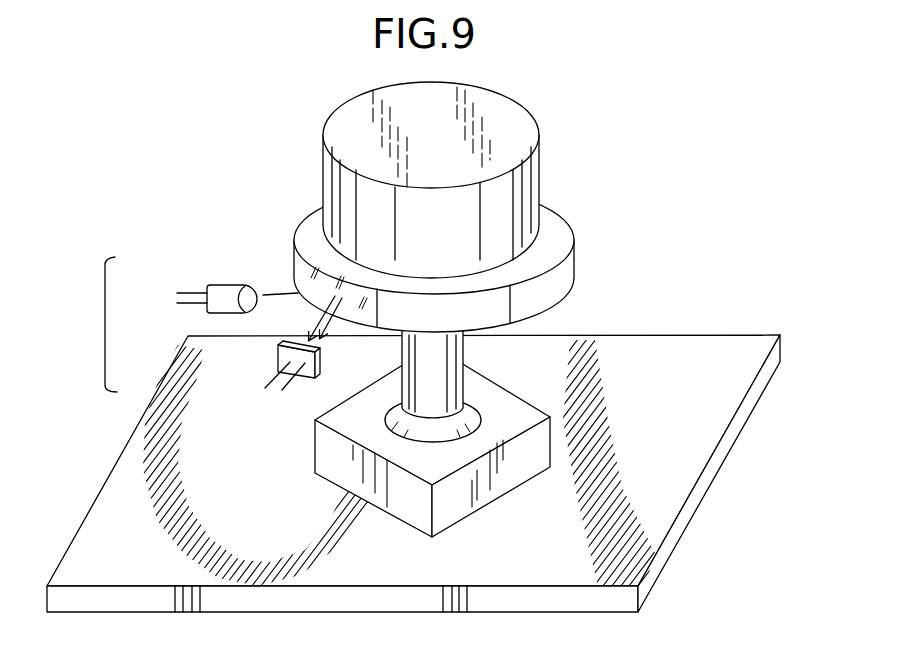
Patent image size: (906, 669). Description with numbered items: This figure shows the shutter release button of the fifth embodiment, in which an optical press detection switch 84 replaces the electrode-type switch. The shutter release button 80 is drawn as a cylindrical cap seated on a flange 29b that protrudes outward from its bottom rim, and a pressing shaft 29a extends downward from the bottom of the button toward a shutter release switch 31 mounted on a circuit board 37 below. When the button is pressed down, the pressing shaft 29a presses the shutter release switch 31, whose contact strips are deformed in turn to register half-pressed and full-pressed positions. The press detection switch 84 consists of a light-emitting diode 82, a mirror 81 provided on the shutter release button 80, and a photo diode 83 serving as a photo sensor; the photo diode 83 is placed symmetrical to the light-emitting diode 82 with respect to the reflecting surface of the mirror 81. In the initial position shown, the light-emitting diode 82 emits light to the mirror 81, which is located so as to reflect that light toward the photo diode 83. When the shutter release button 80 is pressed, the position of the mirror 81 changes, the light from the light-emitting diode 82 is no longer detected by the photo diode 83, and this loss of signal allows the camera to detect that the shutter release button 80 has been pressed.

The shutter release button 80 is at (503, 122).
The flange 29b is at (557, 213).
The pressing shaft 29a is at (445, 355).
The shutter release switch 31 is at (528, 455).
The circuit board 37 is at (660, 350).
The mirror 81 is at (298, 283).
The light-emitting diode 82 is at (227, 305).
The photo diode 83 is at (280, 358).
The press detection switch 84 is at (105, 325).